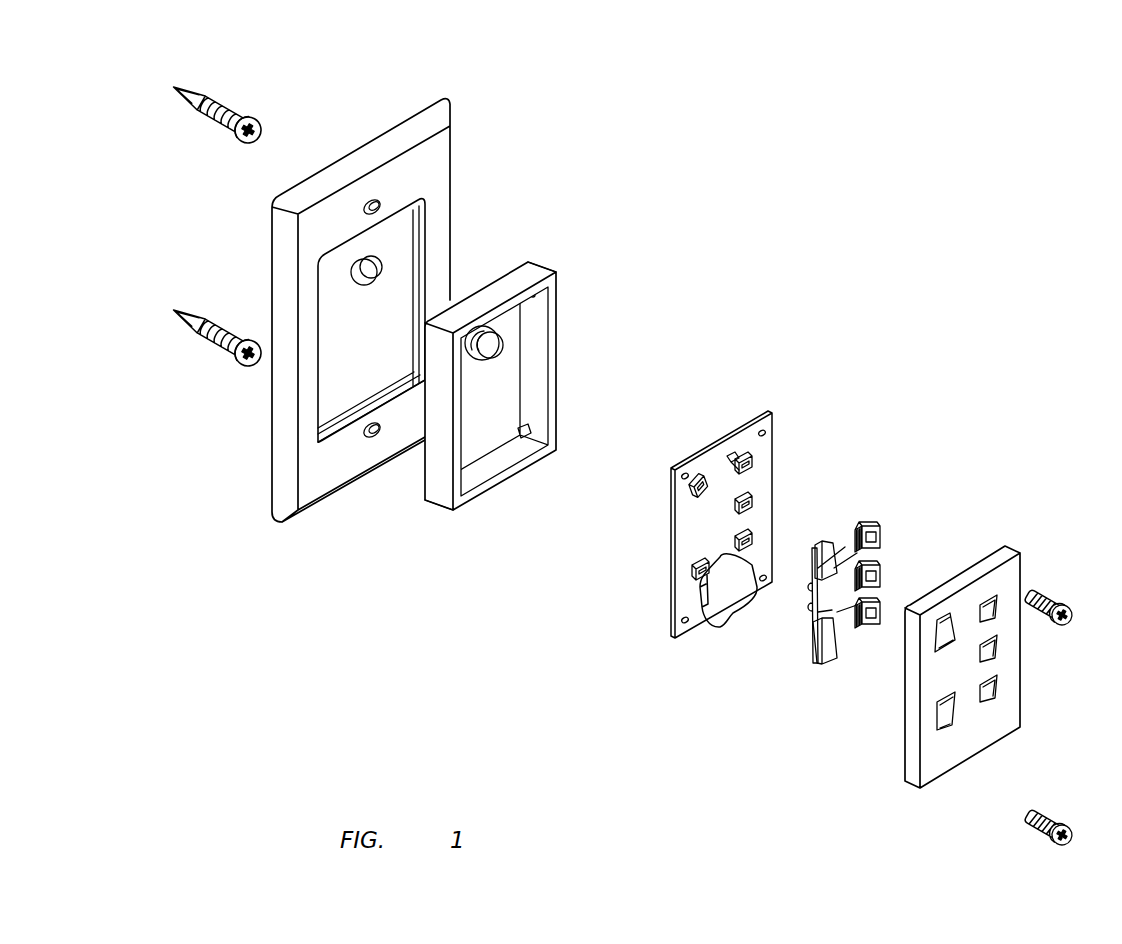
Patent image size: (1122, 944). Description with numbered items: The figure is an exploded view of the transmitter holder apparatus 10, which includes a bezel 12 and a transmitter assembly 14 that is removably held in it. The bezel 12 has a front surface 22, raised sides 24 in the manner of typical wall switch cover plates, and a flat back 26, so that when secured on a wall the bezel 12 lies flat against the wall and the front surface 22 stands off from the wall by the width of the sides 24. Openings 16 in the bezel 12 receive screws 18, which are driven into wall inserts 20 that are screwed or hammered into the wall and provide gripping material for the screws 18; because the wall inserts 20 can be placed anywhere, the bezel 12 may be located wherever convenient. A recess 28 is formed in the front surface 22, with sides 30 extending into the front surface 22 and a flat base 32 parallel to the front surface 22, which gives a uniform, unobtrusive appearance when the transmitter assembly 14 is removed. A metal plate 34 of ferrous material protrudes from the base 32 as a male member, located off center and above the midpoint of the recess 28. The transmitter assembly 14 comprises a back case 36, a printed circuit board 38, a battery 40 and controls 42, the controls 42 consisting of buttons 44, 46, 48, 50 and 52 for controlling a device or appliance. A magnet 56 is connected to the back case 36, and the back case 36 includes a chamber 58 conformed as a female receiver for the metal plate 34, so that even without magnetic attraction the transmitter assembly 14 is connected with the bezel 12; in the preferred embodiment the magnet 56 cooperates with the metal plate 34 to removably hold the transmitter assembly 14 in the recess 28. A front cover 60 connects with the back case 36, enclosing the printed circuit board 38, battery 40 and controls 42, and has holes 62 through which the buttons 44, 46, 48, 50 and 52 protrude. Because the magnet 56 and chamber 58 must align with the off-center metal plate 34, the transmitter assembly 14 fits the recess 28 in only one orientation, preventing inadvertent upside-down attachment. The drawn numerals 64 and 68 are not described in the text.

The transmitter holder apparatus 10 is at (495, 676).
The bezel 12 is at (441, 146).
The transmitter assembly 14 is at (623, 270).
The openings 16 is at (384, 200).
The screws 18 is at (1056, 602).
The wall inserts 20 is at (213, 97).
The front surface 22 is at (312, 491).
The sides 24 is at (289, 440).
The back 26 is at (336, 147).
The recess 28 is at (390, 285).
The sides 30 is at (412, 311).
The base 32 is at (343, 373).
The metal plate 34 is at (378, 266).
The back case 36 is at (557, 366).
The printed circuit board 38 is at (685, 535).
The battery 40 is at (732, 597).
The controls 42 is at (783, 493).
The button 44 is at (708, 482).
The button 46 is at (688, 578).
The button 48 is at (760, 458).
The button 50 is at (753, 503).
The button 52 is at (757, 540).
The magnet 56 is at (493, 345).
The chamber 58 is at (476, 358).
The front cover 60 is at (945, 765).
The holes 62 is at (937, 638).
The rear surface 64 is at (979, 726).
The tabs 68 is at (526, 262).